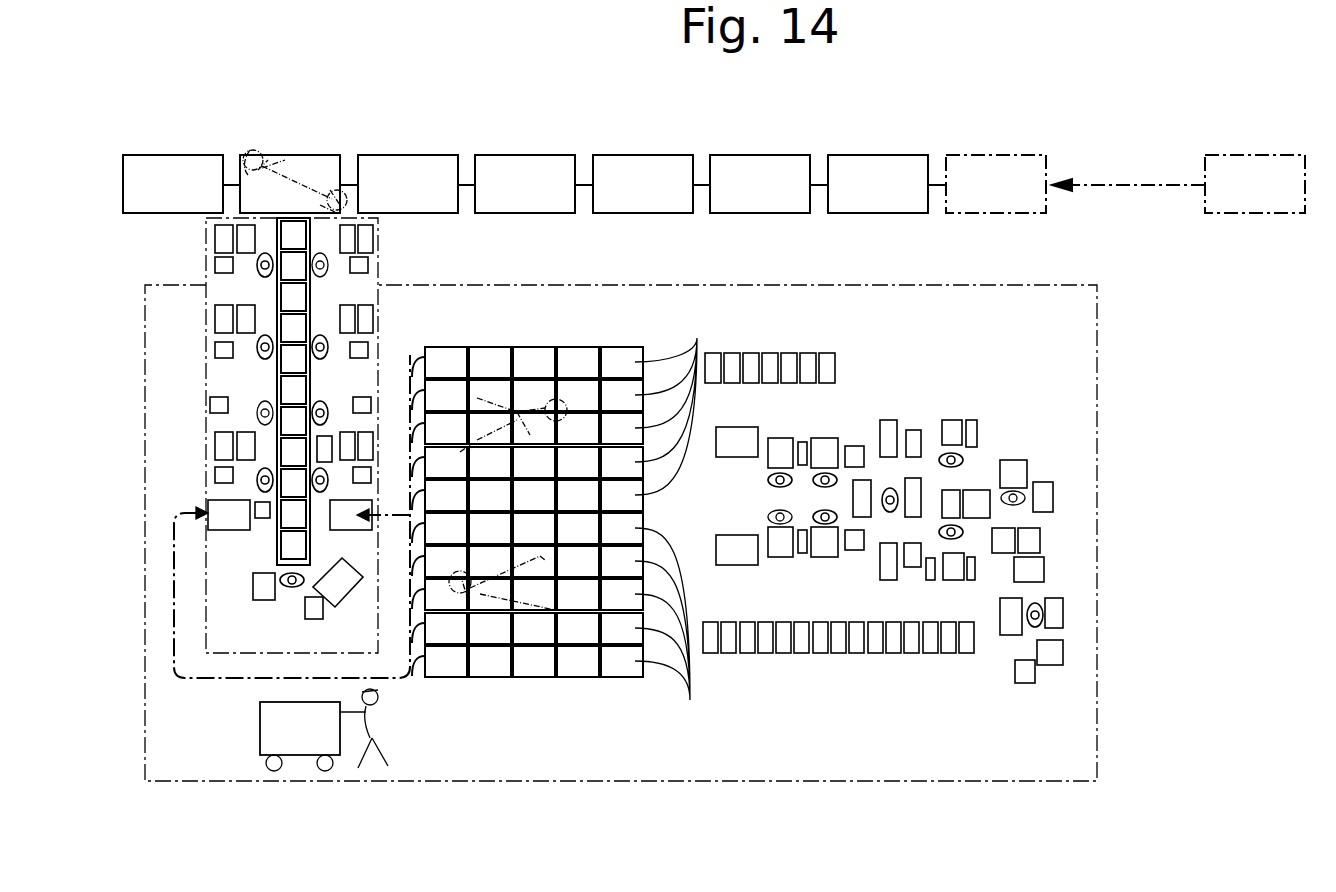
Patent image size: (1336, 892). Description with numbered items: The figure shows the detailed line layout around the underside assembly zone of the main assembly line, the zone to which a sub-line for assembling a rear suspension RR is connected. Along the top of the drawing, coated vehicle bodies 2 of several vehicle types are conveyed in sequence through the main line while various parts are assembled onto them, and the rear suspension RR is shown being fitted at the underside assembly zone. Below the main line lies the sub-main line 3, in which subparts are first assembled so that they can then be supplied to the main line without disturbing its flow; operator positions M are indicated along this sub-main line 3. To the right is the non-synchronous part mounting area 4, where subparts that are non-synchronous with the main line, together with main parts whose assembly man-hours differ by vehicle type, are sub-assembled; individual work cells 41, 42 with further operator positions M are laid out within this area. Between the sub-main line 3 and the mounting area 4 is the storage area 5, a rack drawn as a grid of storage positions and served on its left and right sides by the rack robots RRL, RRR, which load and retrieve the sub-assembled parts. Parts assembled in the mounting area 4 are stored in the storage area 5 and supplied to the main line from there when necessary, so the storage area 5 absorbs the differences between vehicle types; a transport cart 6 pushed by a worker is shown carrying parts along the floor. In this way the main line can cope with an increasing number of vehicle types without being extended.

The vehicle body 2 is at (885, 155).
The rear suspension RR is at (295, 172).
The sub-main line 3 is at (275, 296).
The operator / worker seat M is at (262, 404).
The storage area 5 is at (508, 700).
The left rack robot RRL is at (694, 401).
The right rack robot RRR is at (692, 631).
The non-synchronous part mounting area 4 is at (885, 604).
The assembly cell 41 is at (870, 426).
The assembly cell 42 is at (1053, 462).
The transport cart 6 is at (298, 745).